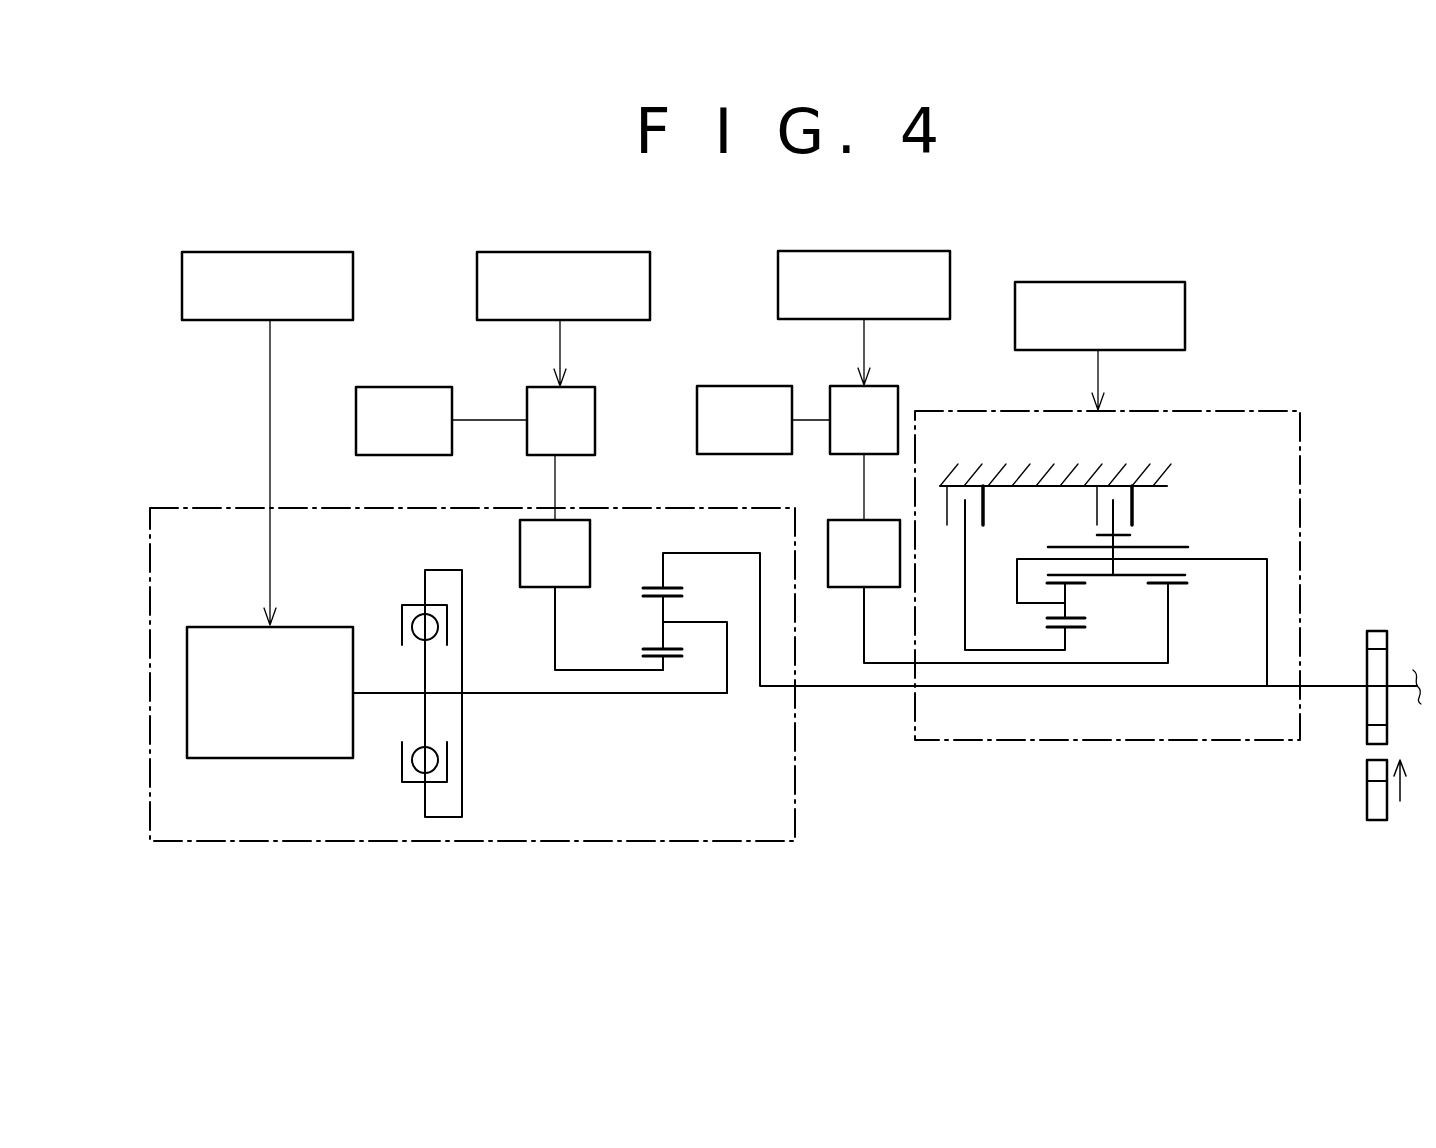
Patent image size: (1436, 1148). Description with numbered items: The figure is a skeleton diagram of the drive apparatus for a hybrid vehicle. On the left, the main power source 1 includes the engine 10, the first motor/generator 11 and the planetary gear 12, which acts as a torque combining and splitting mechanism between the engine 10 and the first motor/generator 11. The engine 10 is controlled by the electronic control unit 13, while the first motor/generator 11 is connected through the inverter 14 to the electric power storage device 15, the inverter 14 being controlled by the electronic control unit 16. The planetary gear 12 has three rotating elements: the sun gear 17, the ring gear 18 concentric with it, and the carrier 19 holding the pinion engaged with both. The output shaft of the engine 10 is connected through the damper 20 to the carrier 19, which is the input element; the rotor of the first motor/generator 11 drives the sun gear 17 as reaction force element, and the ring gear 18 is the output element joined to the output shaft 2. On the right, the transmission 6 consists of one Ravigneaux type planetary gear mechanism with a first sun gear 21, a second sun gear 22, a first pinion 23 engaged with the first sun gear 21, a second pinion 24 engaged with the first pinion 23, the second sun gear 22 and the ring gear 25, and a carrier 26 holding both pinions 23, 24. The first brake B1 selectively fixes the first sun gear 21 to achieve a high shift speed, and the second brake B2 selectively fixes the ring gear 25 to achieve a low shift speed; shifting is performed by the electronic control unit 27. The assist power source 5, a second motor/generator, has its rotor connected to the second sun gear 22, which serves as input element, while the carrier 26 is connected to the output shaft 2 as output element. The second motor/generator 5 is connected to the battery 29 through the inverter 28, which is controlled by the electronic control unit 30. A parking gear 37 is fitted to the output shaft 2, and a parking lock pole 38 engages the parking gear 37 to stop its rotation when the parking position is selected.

The main power source 1 is at (683, 841).
The output shaft 2 is at (1310, 690).
The second motor/generator 5 is at (843, 588).
The transmission 6 is at (1302, 428).
The engine 10 is at (308, 758).
The first motor/generator 11 is at (520, 560).
The planetary gear 12 is at (646, 721).
The electronic control unit (E-ECU) 13 is at (315, 250).
The inverter 14 is at (583, 387).
The electric power storage device 15 is at (403, 386).
The electronic control unit (MG1-ECU) 16 is at (607, 250).
The sun gear 17 is at (672, 656).
The ring gear 18 is at (655, 588).
The carrier 19 is at (693, 622).
The damper 20 is at (413, 782).
The first sun gear 21 is at (1078, 628).
The second sun gear 22 is at (1177, 587).
The first pinion 23 is at (1075, 620).
The second pinion 24 is at (1063, 544).
The ring gear 25 is at (1120, 534).
The carrier 26 is at (1228, 557).
The electronic control unit (T-ECU) 27 is at (1142, 282).
The inverter 28 is at (878, 386).
The battery 29 is at (740, 386).
The electronic control unit (MG2-ECU) 30 is at (908, 251).
The parking gear 37 is at (1387, 630).
The parking lock pole 38 is at (1367, 794).
The first brake B1 is at (975, 484).
The second brake B2 is at (1138, 485).